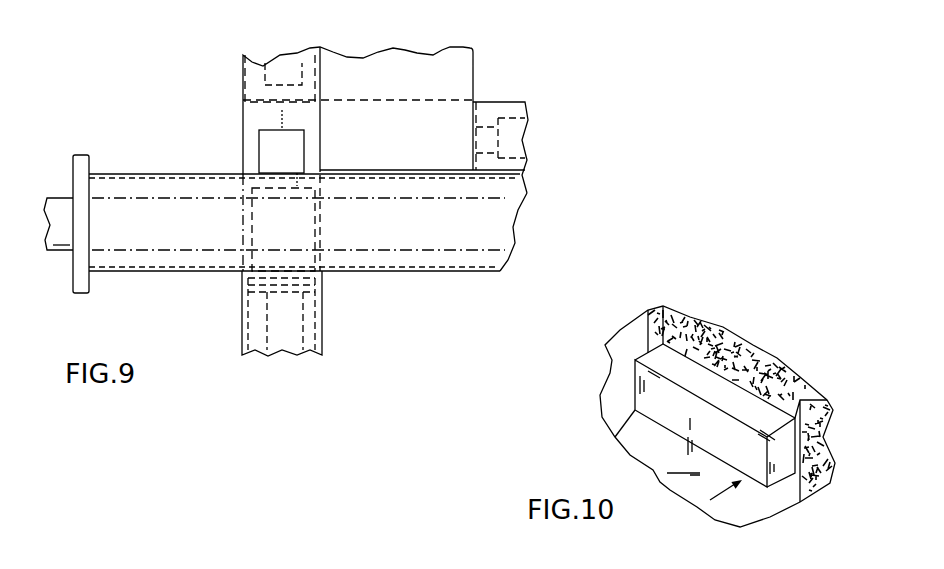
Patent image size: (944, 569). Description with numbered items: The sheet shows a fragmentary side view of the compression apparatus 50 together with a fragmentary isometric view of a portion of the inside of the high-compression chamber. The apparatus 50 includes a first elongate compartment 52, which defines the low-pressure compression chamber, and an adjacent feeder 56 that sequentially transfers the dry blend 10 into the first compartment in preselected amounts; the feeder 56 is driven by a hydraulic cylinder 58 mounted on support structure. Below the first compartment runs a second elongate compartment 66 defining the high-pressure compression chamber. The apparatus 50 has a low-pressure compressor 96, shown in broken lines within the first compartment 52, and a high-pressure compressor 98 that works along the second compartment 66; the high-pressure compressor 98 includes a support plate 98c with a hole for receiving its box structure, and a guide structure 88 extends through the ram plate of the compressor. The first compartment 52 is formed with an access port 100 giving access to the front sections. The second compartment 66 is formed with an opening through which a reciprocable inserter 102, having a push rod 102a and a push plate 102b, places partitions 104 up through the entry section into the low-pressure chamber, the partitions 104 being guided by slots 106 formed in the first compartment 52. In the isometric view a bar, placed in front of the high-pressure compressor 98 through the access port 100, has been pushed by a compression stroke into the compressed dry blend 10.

In FIG. 10, the dry blend 10 is at (722, 324).
In FIG. 9, the apparatus 50 is at (550, 147).
In FIG. 9, the first elongate compartment 52 is at (242, 110).
In FIG. 9, the feeder 56 is at (505, 98).
In FIG. 9, the hydraulic cylinder 58 is at (475, 68).
In FIG. 9, the second elongate compartment 66 is at (472, 272).
In FIG. 9, the guide structure 88 is at (58, 254).
In FIG. 9, the low-pressure compressor 96 is at (238, 72).
In FIG. 9, the high-pressure compressor 98 is at (124, 168).
In FIG. 9, the support plate 98c is at (78, 155).
In FIG. 9, the access port 100 is at (278, 145).
In FIG. 9, the reciprocable inserter 102 is at (328, 322).
In FIG. 9, the push rod 102a is at (275, 323).
In FIG. 9, the push plate 102b is at (250, 285).
In FIG. 9, the partitions 104 is at (316, 220).
In FIG. 10, the slots 106 is at (689, 449).